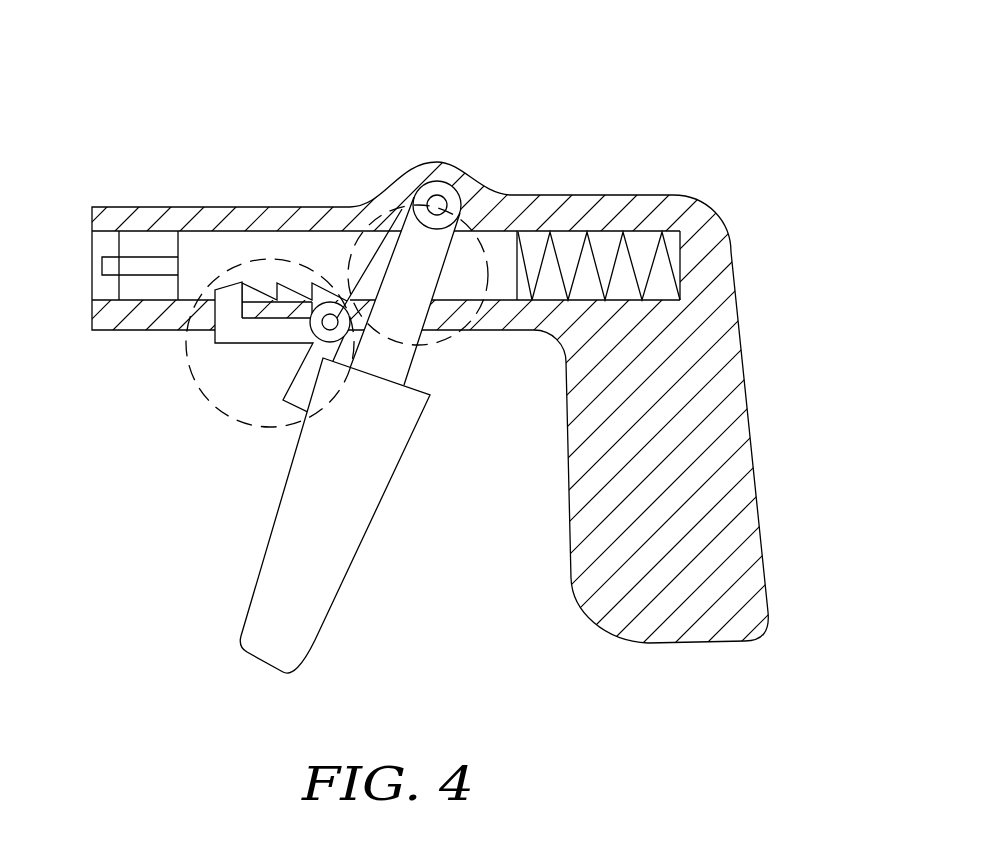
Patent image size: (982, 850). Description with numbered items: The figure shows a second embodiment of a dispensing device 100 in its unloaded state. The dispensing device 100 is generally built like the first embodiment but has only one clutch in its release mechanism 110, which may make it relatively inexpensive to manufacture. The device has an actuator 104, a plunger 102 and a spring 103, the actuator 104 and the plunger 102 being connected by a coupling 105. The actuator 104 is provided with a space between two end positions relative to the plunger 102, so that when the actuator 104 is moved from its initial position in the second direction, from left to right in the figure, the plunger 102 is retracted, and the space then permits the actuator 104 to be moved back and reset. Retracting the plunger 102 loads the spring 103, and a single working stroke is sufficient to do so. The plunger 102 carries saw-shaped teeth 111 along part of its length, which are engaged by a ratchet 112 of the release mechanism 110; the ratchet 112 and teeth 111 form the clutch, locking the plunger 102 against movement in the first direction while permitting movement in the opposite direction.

The dispensing device 100 is at (491, 350).
The plunger 102 is at (232, 243).
The spring 103 is at (596, 256).
The actuator 104 is at (337, 427).
The coupling 105 is at (437, 344).
The release mechanism 110 is at (232, 424).
The teeth 111 is at (300, 288).
The ratchet 112 is at (235, 331).